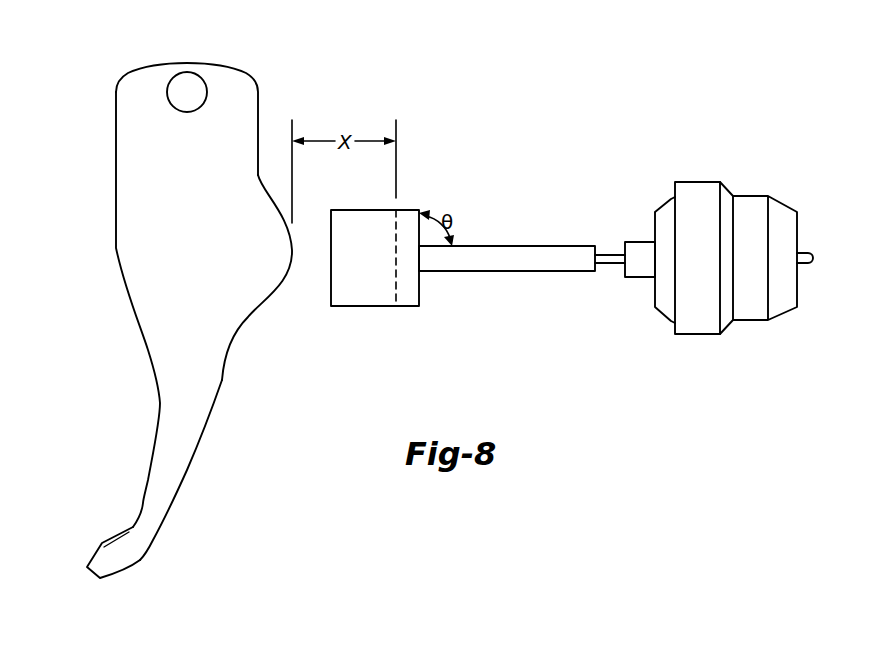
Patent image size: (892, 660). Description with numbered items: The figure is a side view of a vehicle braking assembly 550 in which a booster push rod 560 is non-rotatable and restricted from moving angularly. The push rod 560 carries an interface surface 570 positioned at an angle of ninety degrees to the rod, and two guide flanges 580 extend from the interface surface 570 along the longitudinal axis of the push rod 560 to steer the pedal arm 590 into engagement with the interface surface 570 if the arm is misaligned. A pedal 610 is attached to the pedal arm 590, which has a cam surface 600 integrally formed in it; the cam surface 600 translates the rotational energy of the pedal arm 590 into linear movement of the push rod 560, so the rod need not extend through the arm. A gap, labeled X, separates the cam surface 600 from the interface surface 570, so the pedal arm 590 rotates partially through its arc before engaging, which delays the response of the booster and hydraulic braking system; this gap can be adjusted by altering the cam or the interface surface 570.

The vehicle braking assembly 550 is at (132, 57).
The push rod 560 is at (510, 246).
The interface surface 570 is at (397, 226).
The guide flanges 580 is at (369, 293).
The pedal arm 590 is at (172, 467).
The cam surface 600 is at (257, 295).
The pedal 610 is at (95, 553).